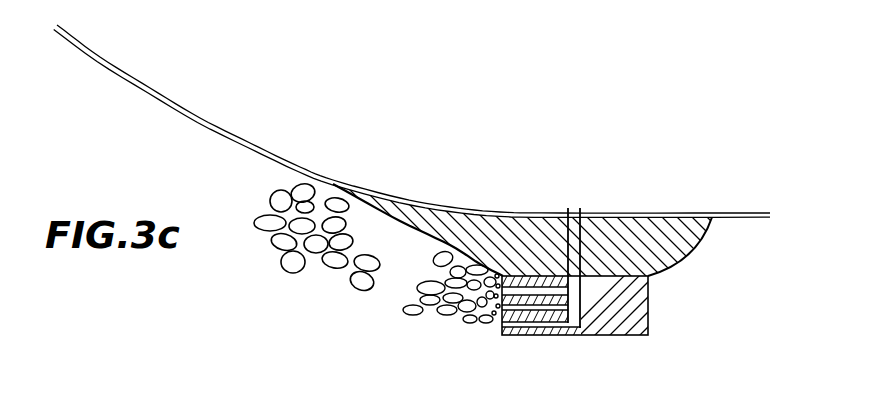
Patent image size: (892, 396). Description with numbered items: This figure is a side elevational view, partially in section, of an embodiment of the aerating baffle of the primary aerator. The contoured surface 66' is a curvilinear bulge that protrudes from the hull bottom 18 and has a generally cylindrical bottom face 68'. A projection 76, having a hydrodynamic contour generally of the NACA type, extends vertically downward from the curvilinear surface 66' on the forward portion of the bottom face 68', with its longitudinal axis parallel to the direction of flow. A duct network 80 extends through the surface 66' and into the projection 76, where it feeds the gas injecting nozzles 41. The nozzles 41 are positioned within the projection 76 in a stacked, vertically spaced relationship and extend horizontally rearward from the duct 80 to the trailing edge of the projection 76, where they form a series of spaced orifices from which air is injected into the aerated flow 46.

The hull bottom 18 is at (763, 217).
The contoured surface 66' is at (572, 240).
The bottom face 68' is at (706, 246).
The projection 76 is at (649, 310).
The duct network 80 is at (577, 218).
The aerated flow 46 is at (272, 250).
The gas injecting nozzles 41 is at (495, 292).